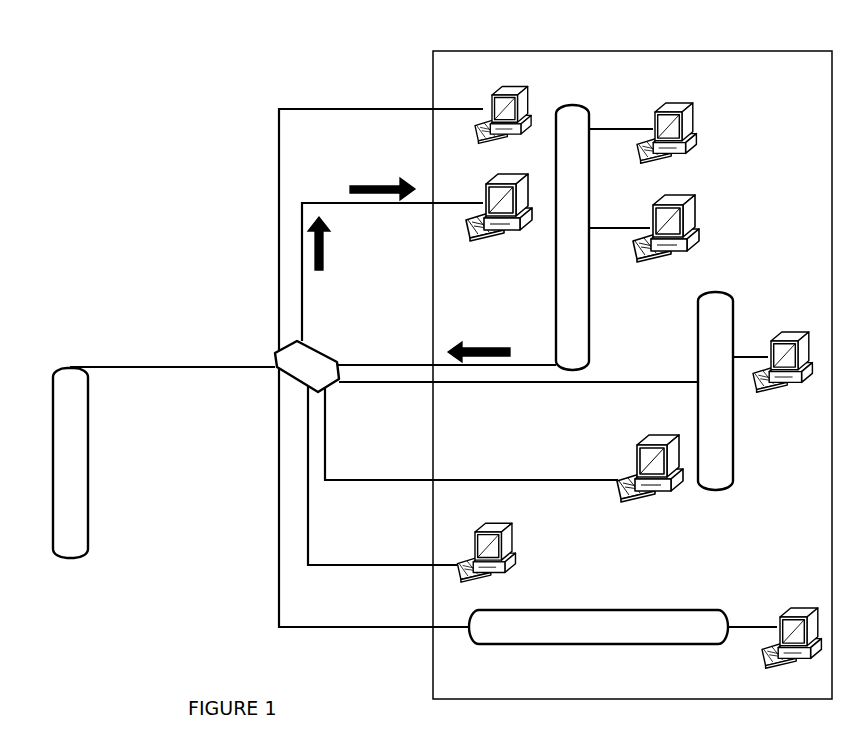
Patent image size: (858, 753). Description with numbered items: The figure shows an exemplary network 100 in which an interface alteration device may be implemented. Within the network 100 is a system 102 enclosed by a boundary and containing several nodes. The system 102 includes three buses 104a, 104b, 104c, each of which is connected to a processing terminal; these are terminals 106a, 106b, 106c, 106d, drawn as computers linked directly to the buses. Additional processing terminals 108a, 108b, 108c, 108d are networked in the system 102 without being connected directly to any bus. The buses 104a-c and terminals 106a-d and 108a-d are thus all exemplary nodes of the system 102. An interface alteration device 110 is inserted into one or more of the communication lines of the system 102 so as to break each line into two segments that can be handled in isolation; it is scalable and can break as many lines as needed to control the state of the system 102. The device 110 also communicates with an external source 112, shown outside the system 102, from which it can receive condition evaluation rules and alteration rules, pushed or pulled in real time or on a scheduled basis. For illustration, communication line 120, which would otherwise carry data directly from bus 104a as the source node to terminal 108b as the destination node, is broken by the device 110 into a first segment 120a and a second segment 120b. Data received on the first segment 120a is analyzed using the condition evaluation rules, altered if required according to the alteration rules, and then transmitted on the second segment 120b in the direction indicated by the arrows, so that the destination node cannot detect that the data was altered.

The network 100 is at (130, 27).
The system 102 is at (632, 375).
The bus 104a is at (573, 240).
The bus 104b is at (717, 390).
The bus 104c is at (600, 627).
The processing terminal 106a is at (676, 103).
The processing terminal 106b is at (683, 200).
The processing terminal 106c is at (790, 332).
The processing terminal 106d is at (781, 620).
The processing terminal 108a is at (510, 88).
The processing terminal 108b is at (485, 200).
The processing terminal 108c is at (636, 460).
The processing terminal 108d is at (506, 533).
The interface alteration device 110 is at (307, 364).
The external source 112 is at (70, 550).
The communication line 120 is at (360, 253).
The first segment 120a is at (395, 365).
The second segment 120b is at (302, 300).